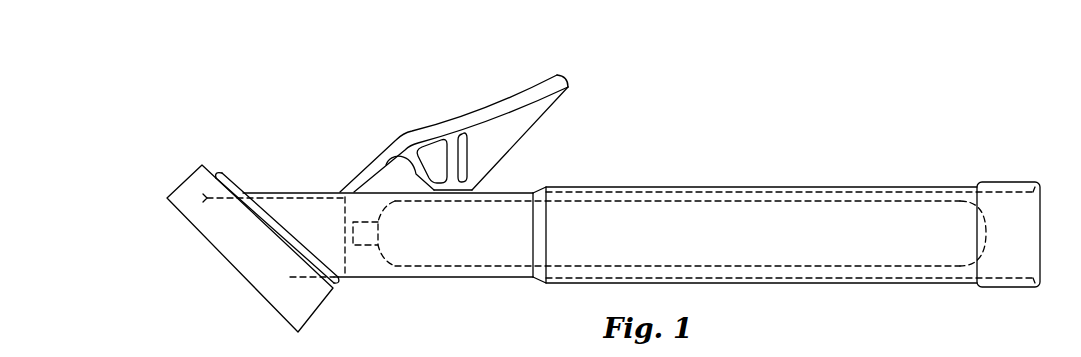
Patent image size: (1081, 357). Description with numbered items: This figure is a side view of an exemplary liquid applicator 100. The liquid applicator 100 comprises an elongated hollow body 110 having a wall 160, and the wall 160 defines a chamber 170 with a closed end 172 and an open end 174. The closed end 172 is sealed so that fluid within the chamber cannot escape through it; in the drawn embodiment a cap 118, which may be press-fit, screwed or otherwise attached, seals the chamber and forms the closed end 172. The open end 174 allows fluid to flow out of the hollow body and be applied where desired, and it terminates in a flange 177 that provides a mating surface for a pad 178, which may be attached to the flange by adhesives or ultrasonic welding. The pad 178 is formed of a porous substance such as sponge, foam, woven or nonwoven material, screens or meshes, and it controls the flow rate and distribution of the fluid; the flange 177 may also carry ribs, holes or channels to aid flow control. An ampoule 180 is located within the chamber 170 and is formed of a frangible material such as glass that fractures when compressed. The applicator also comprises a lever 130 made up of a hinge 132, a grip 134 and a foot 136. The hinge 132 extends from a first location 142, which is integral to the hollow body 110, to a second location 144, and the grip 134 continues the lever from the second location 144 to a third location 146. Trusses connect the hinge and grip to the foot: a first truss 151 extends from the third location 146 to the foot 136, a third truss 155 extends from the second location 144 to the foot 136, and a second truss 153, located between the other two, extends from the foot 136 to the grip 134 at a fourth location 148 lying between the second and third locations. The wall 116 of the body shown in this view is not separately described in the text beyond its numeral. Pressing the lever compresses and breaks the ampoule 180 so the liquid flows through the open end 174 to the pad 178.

The liquid applicator 100 is at (842, 104).
The elongated hollow body 110 is at (613, 186).
The housing body 116 is at (815, 186).
The cap 118 is at (1040, 254).
The lever 130 is at (406, 131).
The hinge 132 is at (358, 172).
The grip 134 is at (512, 102).
The foot 136 is at (473, 189).
The first location 142 is at (336, 188).
The second location 144 is at (402, 152).
The third location 146 is at (566, 83).
The fourth location 148 is at (450, 127).
The first truss 151 is at (537, 124).
The second truss 153 is at (460, 157).
The third truss 155 is at (386, 166).
The wall 160 is at (718, 186).
The chamber 170 is at (977, 191).
The closed end 172 is at (1027, 228).
The open end 174 is at (296, 214).
The flange 177 is at (218, 174).
The pad 178 is at (224, 257).
The ampoule 180 is at (570, 268).